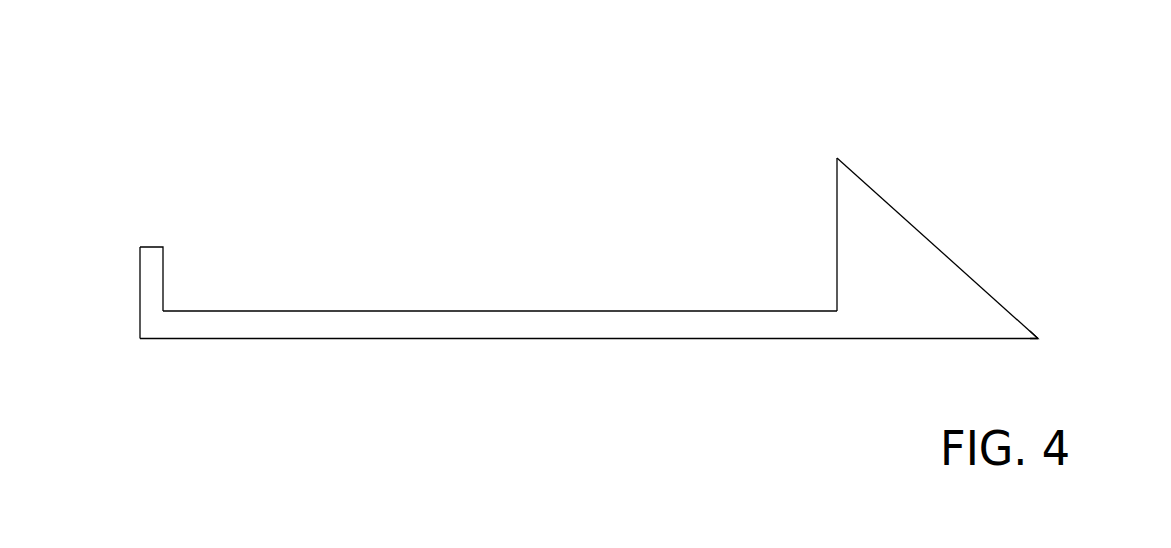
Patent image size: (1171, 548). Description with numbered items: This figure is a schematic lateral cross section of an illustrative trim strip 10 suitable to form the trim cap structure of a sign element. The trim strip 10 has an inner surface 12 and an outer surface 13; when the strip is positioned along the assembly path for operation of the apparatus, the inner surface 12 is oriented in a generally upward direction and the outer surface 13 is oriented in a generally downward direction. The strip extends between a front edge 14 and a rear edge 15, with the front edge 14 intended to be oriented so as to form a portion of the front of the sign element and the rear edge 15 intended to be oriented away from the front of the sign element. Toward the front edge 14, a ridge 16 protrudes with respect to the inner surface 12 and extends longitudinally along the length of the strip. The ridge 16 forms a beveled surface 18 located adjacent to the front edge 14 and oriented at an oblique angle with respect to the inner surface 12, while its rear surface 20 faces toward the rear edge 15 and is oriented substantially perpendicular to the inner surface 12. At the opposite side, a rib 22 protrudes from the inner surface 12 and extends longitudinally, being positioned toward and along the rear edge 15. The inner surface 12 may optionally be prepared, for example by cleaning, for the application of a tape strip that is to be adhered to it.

The trim strip 10 is at (920, 100).
The inner surface 12 is at (360, 311).
The outer surface 13 is at (380, 338).
The front edge 14 is at (1040, 336).
The rear edge 15 is at (140, 324).
The ridge 16 is at (836, 159).
The beveled surface 18 is at (902, 213).
The rear surface 20 is at (836, 240).
The rib 22 is at (148, 247).